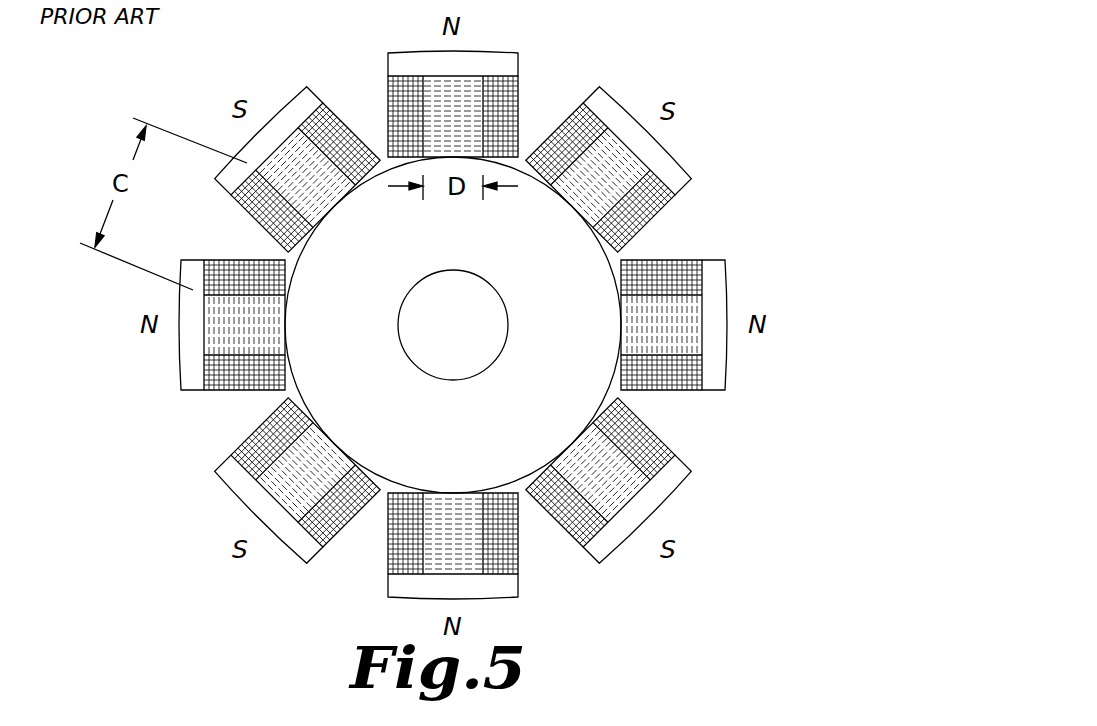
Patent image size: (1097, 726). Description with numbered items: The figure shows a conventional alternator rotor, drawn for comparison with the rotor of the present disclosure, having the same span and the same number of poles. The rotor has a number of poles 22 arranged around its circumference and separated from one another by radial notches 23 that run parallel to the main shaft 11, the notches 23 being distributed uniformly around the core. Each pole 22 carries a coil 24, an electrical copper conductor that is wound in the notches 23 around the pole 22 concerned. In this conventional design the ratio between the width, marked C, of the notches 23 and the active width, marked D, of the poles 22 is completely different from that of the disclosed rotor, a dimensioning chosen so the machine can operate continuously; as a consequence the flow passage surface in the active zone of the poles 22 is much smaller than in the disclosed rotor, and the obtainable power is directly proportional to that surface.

The main shaft 11 is at (482, 305).
The pole 22 is at (452, 90).
The radial notch 23 is at (698, 218).
The coil 24 is at (408, 112).